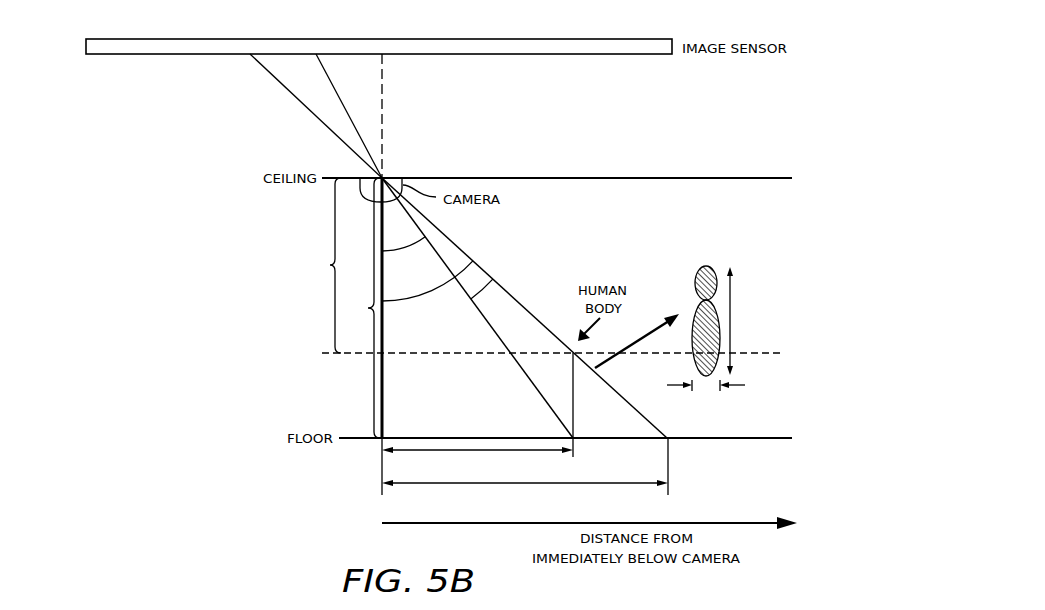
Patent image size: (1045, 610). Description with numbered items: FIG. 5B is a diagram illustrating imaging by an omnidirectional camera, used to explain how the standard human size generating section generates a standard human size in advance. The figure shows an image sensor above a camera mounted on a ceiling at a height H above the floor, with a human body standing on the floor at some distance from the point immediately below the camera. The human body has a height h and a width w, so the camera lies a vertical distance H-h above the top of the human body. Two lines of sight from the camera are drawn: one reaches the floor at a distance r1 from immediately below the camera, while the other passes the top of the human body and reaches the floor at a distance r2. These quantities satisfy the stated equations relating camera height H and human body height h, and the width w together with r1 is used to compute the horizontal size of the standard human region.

The height of camera H is at (367, 308).
The camera height above human body H-h is at (318, 265).
The height of human body h is at (659, 362).
The width of human body w is at (706, 395).
The distance r1 is at (477, 459).
The distance r2 is at (525, 492).